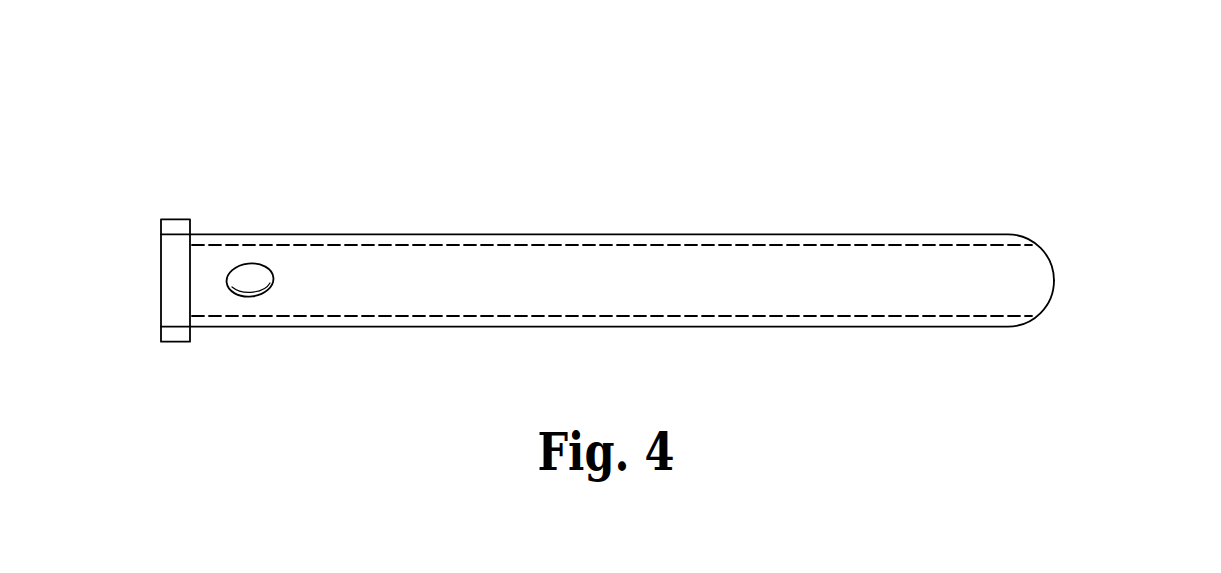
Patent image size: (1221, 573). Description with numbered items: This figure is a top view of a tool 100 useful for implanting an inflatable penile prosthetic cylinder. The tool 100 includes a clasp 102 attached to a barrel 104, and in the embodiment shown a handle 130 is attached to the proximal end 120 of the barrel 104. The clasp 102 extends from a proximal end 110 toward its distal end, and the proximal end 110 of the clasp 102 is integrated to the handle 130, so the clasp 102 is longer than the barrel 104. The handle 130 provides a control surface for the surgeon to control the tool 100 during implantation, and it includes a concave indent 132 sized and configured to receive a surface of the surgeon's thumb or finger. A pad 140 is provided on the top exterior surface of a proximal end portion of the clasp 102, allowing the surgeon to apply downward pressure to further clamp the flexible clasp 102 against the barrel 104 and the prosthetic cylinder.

The tool 100 is at (612, 141).
The clasp 102 is at (398, 265).
The barrel 104 is at (408, 315).
The proximal end of clasp 110 is at (161, 298).
The proximal end of barrel 120 is at (190, 288).
The handle 130 is at (176, 218).
The concave indent 132 is at (173, 257).
The pad 140 is at (251, 280).